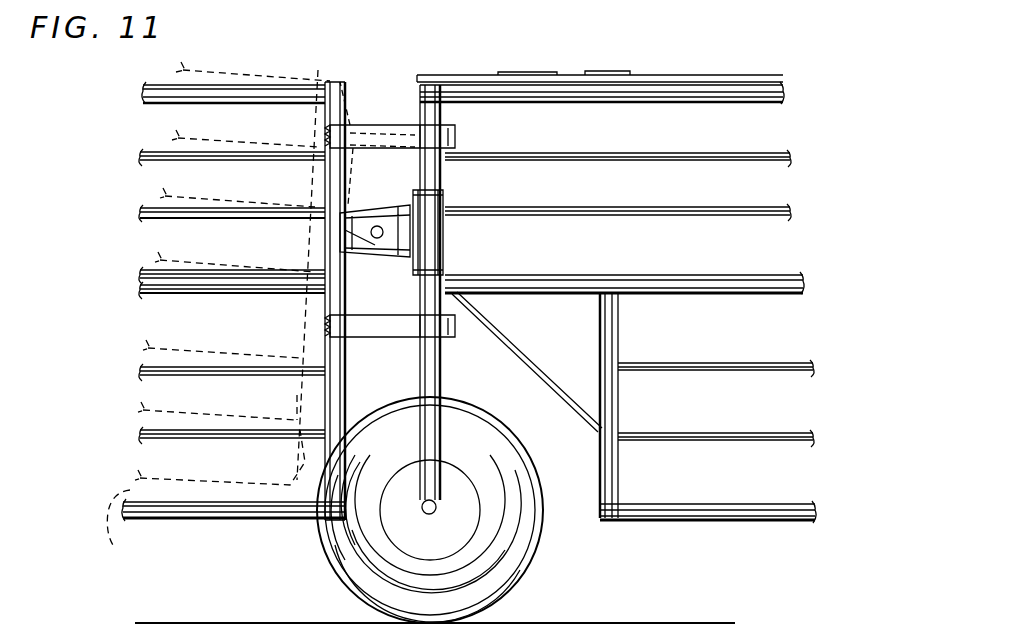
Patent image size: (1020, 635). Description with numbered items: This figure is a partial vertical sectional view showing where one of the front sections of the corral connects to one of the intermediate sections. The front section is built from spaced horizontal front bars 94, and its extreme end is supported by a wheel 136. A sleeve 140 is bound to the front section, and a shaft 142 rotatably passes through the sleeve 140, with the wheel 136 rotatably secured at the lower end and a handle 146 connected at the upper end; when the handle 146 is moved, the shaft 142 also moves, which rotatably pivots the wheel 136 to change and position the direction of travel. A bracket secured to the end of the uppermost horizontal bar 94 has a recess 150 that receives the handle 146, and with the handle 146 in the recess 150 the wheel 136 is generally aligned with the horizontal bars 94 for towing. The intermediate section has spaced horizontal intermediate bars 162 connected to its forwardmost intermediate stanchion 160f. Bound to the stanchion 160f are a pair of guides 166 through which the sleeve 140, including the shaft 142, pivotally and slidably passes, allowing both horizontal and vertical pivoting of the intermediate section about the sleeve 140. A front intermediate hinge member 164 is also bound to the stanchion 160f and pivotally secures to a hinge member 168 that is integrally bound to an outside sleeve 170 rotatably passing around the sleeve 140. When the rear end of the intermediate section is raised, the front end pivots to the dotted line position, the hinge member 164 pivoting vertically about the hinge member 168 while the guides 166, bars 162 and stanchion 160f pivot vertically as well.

The horizontal front bar 94 is at (690, 92).
The wheel 136 is at (518, 566).
The sleeve 140 is at (432, 390).
The shaft 142 is at (432, 472).
The handle 146 is at (433, 82).
The recess 150 is at (590, 78).
The forwardmost intermediate stanchion 160f is at (313, 240).
The horizontal intermediate bar 162 is at (208, 75).
The front intermediate hinge member 164 is at (362, 125).
The guide 166 is at (385, 138).
The hinge member 168 is at (366, 205).
The outside sleeve 170 is at (445, 255).